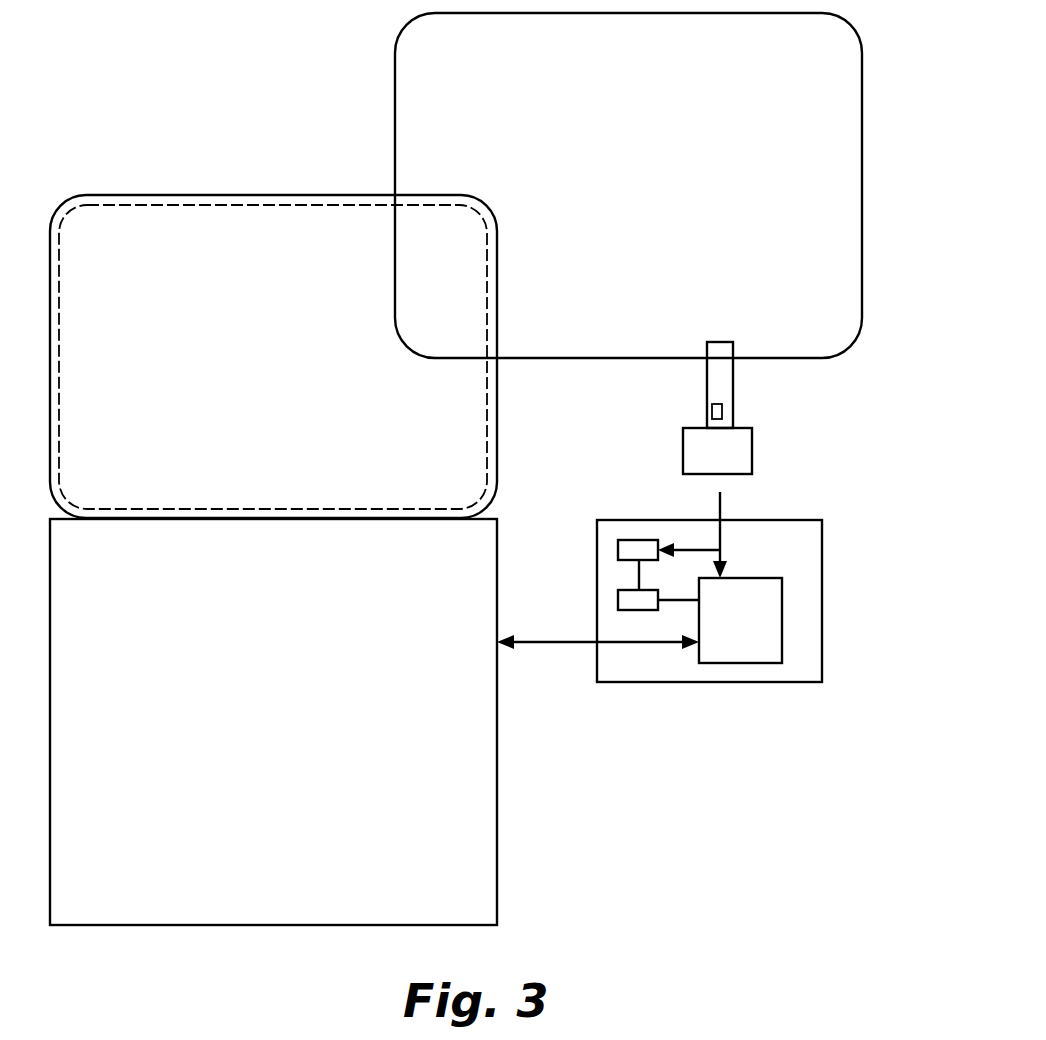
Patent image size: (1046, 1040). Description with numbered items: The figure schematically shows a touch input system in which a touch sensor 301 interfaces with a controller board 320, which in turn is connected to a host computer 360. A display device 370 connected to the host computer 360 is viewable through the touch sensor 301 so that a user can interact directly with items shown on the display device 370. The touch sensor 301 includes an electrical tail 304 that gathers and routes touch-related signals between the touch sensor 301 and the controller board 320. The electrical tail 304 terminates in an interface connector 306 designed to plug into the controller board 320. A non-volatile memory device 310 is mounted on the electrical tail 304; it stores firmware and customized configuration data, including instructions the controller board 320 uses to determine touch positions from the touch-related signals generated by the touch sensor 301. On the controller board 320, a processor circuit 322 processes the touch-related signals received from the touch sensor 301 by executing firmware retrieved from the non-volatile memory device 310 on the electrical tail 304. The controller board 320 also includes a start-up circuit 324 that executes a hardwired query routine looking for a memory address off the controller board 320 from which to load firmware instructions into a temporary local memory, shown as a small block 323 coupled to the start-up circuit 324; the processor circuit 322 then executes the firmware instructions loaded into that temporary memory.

The touch sensor 301 is at (882, 291).
The electrical tail 304 is at (723, 382).
The interface connector 306 is at (738, 448).
The non-volatile memory device 310 is at (712, 412).
The controller board 320 is at (733, 682).
The processor circuit 322 is at (782, 612).
The memory 323 is at (618, 550).
The start-up circuit 324 is at (618, 600).
The host computer 360 is at (478, 830).
The display device 370 is at (238, 227).